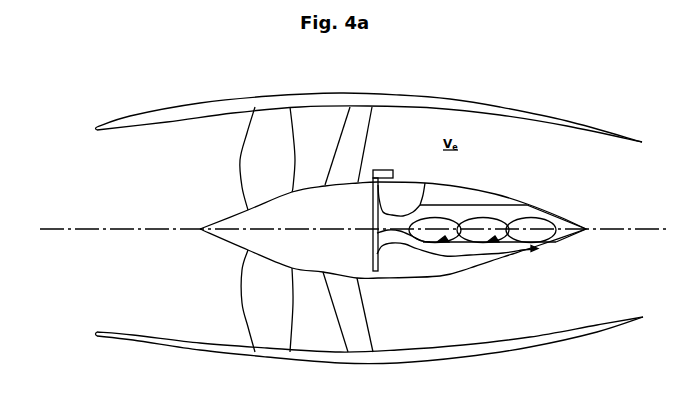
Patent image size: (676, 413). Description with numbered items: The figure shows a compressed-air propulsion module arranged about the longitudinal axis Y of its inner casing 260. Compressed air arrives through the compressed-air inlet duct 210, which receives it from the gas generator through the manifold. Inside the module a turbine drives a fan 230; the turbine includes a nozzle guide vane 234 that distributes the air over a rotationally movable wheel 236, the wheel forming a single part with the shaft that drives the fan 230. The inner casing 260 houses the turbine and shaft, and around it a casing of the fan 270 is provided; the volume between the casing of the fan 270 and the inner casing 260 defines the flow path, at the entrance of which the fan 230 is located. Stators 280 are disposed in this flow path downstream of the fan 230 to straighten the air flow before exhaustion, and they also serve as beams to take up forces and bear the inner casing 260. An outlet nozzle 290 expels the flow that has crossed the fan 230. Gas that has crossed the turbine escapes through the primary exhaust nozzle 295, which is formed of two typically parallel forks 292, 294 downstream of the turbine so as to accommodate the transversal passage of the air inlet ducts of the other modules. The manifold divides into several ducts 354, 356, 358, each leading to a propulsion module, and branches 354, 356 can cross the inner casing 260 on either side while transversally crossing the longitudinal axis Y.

The casing of the fan 270 is at (370, 97).
The outlet nozzle 290 is at (583, 333).
The stators 280 is at (348, 142).
The fan 230 is at (256, 295).
The rotationally movable wheel 236 is at (332, 252).
The nozzle guide vane 234 is at (372, 195).
The compressed-air inlet duct 210 is at (382, 172).
The first fork of the exhaust nozzle 292 is at (424, 183).
The second fork of the exhaust nozzle 294 is at (452, 247).
The inner casing 260 is at (424, 267).
The primary exhaust nozzle 295 is at (540, 249).
The manifold duct 354 is at (442, 212).
The manifold duct 356 is at (485, 217).
The manifold duct 358 is at (532, 217).
The longitudinal axis of the casing Y is at (38, 228).